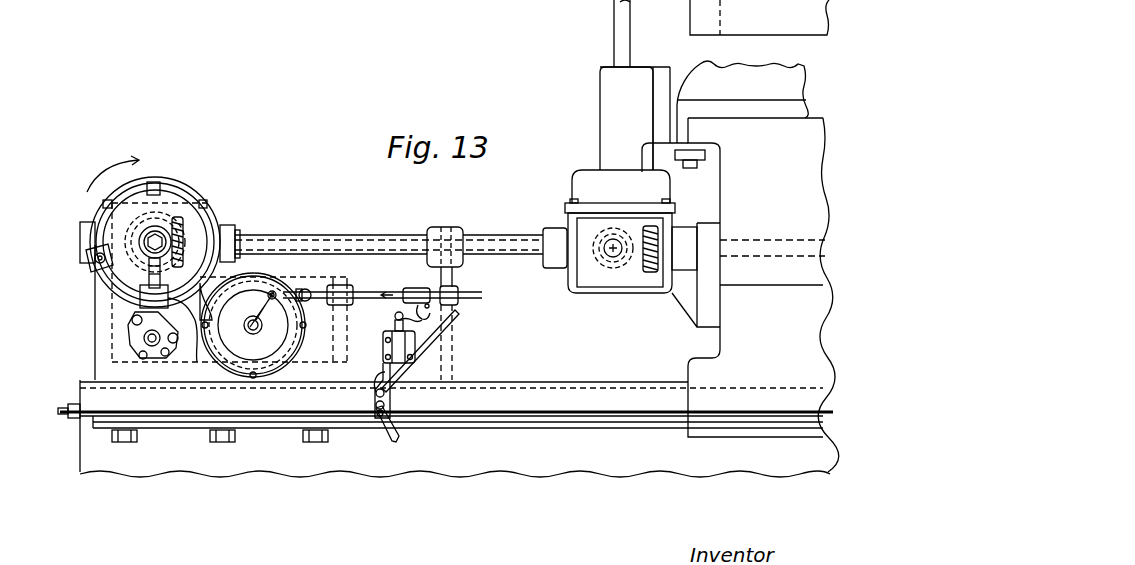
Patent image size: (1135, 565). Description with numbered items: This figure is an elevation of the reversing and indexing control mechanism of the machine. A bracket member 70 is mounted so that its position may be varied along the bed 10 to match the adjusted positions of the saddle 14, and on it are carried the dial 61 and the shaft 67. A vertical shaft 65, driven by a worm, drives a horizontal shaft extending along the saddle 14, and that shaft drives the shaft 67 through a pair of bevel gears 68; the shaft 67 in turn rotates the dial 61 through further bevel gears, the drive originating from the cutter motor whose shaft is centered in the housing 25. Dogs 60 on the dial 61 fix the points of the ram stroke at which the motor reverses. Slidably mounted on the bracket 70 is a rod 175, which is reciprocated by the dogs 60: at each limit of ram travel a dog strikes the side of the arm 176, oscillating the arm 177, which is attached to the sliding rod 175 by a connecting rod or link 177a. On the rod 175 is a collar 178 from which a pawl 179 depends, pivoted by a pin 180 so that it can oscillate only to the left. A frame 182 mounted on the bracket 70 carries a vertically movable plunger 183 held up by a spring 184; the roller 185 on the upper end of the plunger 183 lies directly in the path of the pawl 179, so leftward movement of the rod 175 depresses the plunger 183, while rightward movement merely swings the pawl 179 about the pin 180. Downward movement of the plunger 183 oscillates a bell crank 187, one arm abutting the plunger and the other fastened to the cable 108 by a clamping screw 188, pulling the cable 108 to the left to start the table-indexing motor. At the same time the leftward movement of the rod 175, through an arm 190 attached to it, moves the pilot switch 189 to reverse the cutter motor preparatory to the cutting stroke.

The bed 10 is at (493, 470).
The saddle 14 is at (719, 341).
The housing 25 is at (740, 70).
The dogs 60 is at (90, 263).
The dial 61 is at (178, 192).
The vertical shaft 65 is at (613, 20).
The shaft 67 is at (315, 238).
The bevel gears 68 is at (645, 276).
The bracket member 70 is at (205, 402).
The cable 108 is at (543, 415).
The rod 175 is at (352, 286).
The arm 176 is at (140, 296).
The arm 177 is at (198, 320).
The connecting rod or link 177a is at (222, 280).
The collar 178 is at (422, 288).
The pawl 179 is at (430, 312).
The pin 180 is at (425, 307).
The frame 182 is at (383, 341).
The plunger 183 is at (437, 328).
The spring 184 is at (425, 348).
The roller 185 is at (395, 318).
The bell crank 187 is at (372, 378).
The clamping screw 188 is at (382, 433).
The pilot switch 189 is at (268, 355).
The arm 190 is at (265, 303).